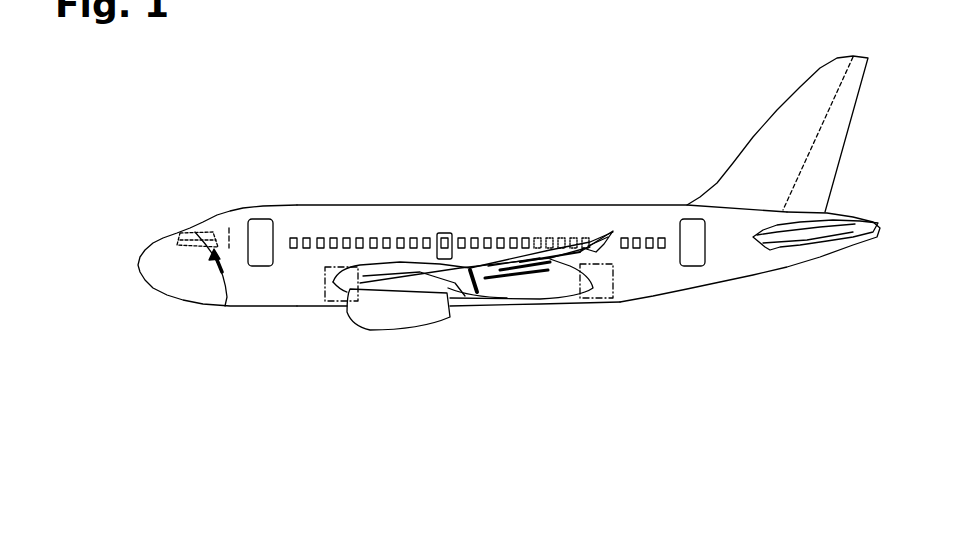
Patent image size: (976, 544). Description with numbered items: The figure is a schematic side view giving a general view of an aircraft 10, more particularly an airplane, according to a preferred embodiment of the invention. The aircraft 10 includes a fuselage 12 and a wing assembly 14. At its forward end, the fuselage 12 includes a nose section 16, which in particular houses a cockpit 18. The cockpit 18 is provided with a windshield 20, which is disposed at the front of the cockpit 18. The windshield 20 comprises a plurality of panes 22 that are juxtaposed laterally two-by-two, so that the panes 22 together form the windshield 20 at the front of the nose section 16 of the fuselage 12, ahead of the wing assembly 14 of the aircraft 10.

The aircraft 10 is at (147, 191).
The fuselage 12 is at (500, 222).
The wing assembly 14 is at (475, 293).
The nose section 16 is at (185, 273).
The cockpit 18 is at (230, 224).
The windshield 20 is at (227, 300).
The panes 22 is at (212, 232).